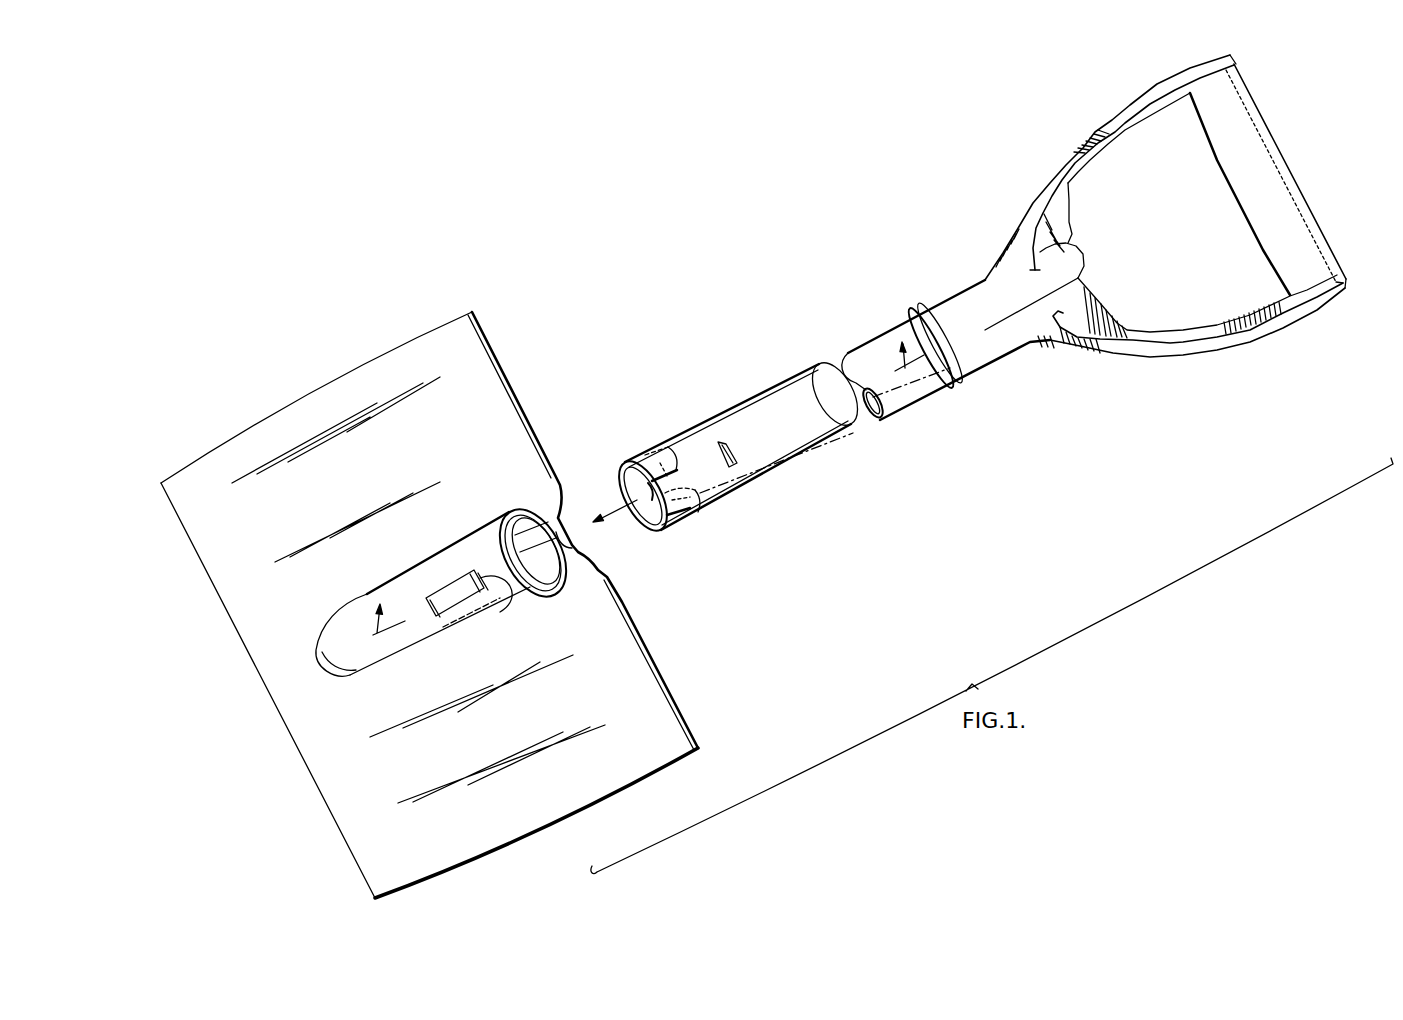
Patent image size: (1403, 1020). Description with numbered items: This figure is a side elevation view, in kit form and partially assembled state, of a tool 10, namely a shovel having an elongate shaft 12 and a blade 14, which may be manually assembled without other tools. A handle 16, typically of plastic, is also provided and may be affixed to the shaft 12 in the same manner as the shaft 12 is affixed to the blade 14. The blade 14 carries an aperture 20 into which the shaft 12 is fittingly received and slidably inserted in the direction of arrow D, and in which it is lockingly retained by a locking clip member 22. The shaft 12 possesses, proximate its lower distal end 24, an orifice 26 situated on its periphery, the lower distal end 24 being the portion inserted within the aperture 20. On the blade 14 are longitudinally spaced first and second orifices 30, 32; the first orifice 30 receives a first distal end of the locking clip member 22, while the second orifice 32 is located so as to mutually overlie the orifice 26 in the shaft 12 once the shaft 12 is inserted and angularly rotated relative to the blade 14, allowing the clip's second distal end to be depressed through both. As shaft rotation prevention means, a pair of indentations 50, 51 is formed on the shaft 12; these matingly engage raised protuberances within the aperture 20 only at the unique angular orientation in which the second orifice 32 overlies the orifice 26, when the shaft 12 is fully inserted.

The tool 10 is at (772, 265).
The shaft 12 is at (797, 368).
The blade 14 is at (671, 693).
The handle 16 is at (1193, 345).
The aperture 20 is at (538, 510).
The locking clip member 22 is at (455, 583).
The lower distal end 24 is at (643, 535).
The orifice 26 is at (733, 438).
The first orifice 30 is at (513, 604).
The second orifice 32 is at (440, 627).
The indentation 50 is at (645, 462).
The indentation 51 is at (682, 522).